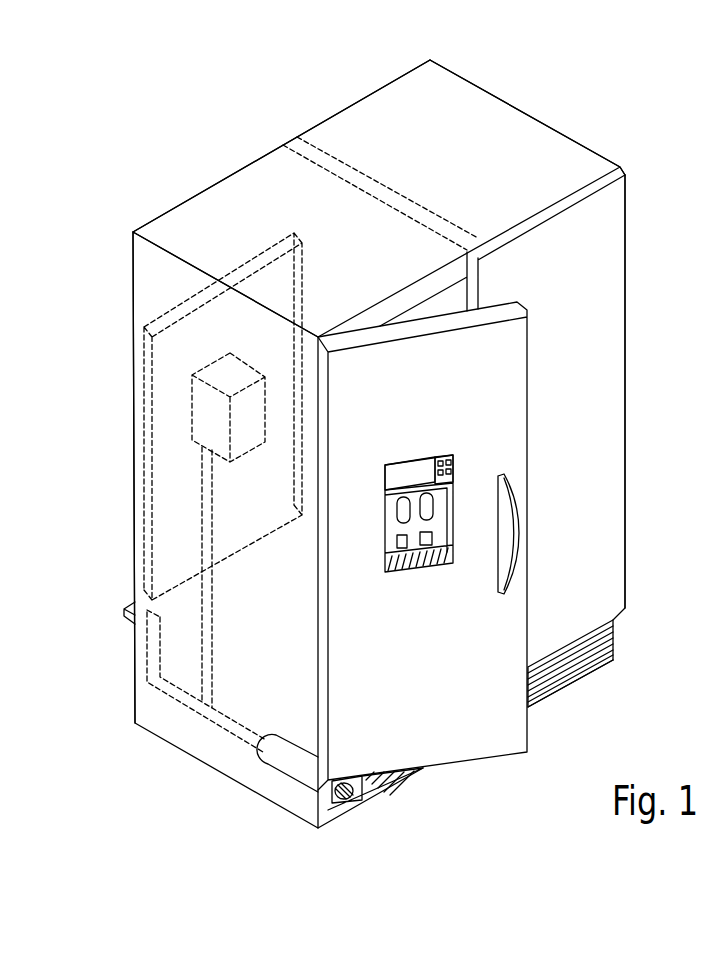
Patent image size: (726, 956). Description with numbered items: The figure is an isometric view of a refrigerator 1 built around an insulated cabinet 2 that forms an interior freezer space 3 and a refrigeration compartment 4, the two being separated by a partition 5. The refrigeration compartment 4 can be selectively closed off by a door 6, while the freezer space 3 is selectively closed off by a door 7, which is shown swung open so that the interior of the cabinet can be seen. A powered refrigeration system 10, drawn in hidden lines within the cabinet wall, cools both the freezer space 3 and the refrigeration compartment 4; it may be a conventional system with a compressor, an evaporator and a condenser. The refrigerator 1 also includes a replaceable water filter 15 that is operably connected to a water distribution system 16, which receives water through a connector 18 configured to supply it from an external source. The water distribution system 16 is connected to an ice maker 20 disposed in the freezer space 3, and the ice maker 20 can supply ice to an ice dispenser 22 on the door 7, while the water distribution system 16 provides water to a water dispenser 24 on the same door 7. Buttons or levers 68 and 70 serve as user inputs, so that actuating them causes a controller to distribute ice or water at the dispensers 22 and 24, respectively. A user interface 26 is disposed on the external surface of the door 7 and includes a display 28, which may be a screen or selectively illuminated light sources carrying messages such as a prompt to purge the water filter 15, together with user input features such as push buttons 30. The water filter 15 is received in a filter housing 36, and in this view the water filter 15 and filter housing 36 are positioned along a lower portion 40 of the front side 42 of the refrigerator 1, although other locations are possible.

The refrigerator 1 is at (572, 130).
The insulated cabinet 2 is at (495, 120).
The freezer space 3 is at (205, 202).
The refrigeration compartment 4 is at (387, 103).
The partition 5 is at (313, 152).
The door 6 is at (604, 470).
The door 7 is at (467, 752).
The powered refrigeration system 10 is at (160, 365).
The replaceable water filter 15 is at (360, 800).
The water distribution system 16 is at (193, 712).
The connector 18 is at (124, 610).
The ice maker 20 is at (192, 422).
The ice dispenser 22 is at (400, 523).
The water dispenser 24 is at (430, 517).
The user interface 26 is at (410, 470).
The display 28 is at (390, 470).
The push buttons 30 is at (437, 460).
The filter housing 36 is at (335, 805).
The lower portion 40 is at (615, 638).
The front side 42 is at (578, 678).
The button or lever 68 is at (402, 548).
The button or lever 70 is at (425, 550).